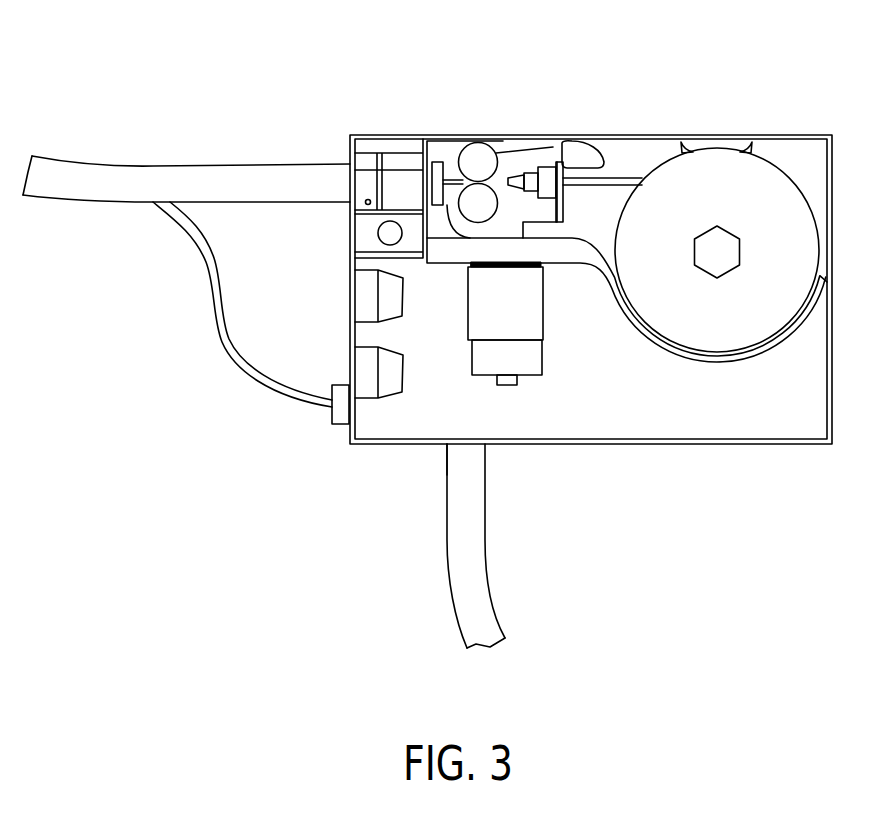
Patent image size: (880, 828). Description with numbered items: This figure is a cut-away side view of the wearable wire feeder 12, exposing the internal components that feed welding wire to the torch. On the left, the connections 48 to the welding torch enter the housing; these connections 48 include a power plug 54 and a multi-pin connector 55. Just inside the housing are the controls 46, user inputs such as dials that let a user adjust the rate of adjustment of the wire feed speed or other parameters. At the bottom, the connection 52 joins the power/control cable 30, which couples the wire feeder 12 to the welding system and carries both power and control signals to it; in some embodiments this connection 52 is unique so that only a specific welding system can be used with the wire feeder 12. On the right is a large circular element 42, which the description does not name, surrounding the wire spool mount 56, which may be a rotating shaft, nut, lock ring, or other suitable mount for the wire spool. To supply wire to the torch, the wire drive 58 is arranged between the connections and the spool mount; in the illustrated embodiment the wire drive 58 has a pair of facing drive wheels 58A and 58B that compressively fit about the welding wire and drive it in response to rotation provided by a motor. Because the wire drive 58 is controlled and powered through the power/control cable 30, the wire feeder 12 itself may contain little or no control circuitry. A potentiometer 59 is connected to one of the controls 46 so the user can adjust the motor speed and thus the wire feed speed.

The wire feeder 12 is at (757, 90).
The power/control cable 30 is at (482, 542).
The rotor wheel 42 is at (717, 150).
The dials 46 is at (360, 358).
The connections 48 is at (341, 161).
The connection 52 is at (455, 470).
The power plug 54 is at (366, 158).
The multi-pin connector 55 is at (348, 427).
The wire spool mount 56 is at (720, 240).
The wire drive 58 is at (490, 210).
The drive wheel 58A is at (477, 155).
The drive wheel 58B is at (525, 162).
The potentiometer 59 is at (528, 377).